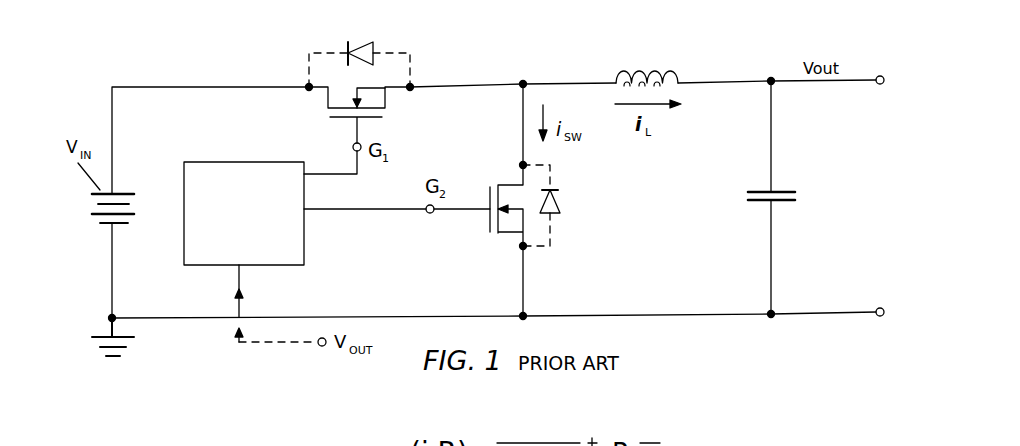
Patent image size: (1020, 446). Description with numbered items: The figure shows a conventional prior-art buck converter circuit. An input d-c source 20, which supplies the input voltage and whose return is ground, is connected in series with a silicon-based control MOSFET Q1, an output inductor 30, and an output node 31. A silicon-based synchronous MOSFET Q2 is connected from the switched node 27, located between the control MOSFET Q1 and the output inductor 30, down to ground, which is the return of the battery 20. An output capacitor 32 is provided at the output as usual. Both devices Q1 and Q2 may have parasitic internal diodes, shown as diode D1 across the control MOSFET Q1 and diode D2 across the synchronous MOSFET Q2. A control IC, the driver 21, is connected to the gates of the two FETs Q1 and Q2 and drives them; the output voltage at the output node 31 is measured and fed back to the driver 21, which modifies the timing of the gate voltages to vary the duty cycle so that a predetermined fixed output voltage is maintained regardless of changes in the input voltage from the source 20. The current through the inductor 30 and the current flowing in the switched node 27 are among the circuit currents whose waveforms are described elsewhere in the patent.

The input d-c source 20 is at (120, 228).
The control IC (driver) 21 is at (240, 160).
The switched node 27 is at (528, 80).
The output inductor 30 is at (672, 72).
The output node 31 is at (778, 88).
The output capacitor 32 is at (760, 207).
The control MOSFET Q1 is at (393, 111).
The synchronous MOSFET Q2 is at (493, 242).
The parasitic internal diode D1 is at (377, 48).
The parasitic internal diode D2 is at (572, 205).